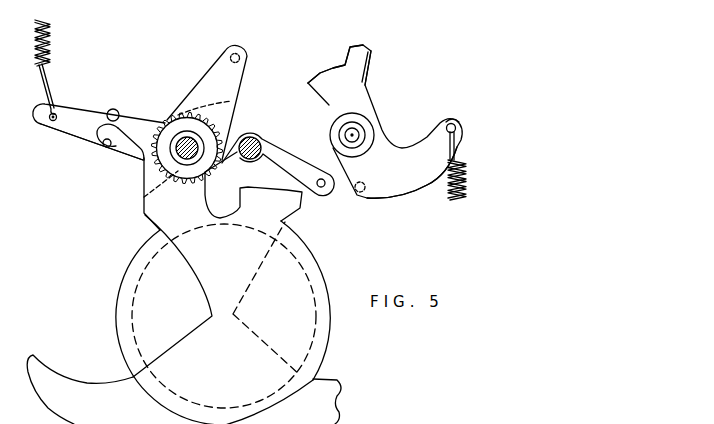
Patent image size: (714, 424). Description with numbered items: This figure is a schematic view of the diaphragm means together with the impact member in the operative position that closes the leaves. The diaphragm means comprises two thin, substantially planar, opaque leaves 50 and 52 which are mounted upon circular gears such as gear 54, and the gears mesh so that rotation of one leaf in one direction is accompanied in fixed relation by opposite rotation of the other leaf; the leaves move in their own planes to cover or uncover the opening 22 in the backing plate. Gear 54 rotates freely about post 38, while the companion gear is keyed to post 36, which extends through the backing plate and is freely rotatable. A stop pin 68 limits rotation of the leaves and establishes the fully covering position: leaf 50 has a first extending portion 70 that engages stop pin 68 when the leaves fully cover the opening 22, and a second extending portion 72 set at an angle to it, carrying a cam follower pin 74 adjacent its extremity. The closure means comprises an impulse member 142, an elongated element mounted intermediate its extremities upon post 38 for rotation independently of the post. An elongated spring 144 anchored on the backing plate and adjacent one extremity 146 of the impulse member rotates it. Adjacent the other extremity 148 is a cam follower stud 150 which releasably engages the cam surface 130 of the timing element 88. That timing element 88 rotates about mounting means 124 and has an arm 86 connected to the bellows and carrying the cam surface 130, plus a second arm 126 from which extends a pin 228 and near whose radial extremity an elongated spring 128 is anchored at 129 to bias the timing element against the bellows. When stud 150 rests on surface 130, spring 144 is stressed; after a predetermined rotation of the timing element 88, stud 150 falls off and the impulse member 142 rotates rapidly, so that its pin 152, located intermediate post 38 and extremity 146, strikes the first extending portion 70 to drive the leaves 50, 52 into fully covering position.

The opening 22 is at (313, 275).
The post 36 is at (250, 134).
The post 38 is at (178, 119).
The leaf 50 is at (76, 390).
The leaf 52 is at (328, 393).
The circular gear 54 is at (144, 197).
The stop pin 68 is at (113, 109).
The first extending portion 70 is at (120, 133).
The second extending portion 72 is at (214, 82).
The pin 74 is at (243, 56).
The arm 86 is at (373, 62).
The timing element 88 is at (413, 167).
The mounting means 124 is at (357, 130).
The second arm 126 is at (428, 160).
The elongated spring 128 is at (464, 172).
The anchoring point 129 is at (456, 125).
The cam surface 130 is at (333, 68).
The impulse member 142 is at (77, 124).
The elongated spring 144 is at (52, 47).
The extremity 146 is at (62, 127).
The extremity 148 is at (305, 152).
The stud 150 is at (325, 192).
The pin 152 is at (97, 145).
The pin 228 is at (370, 193).